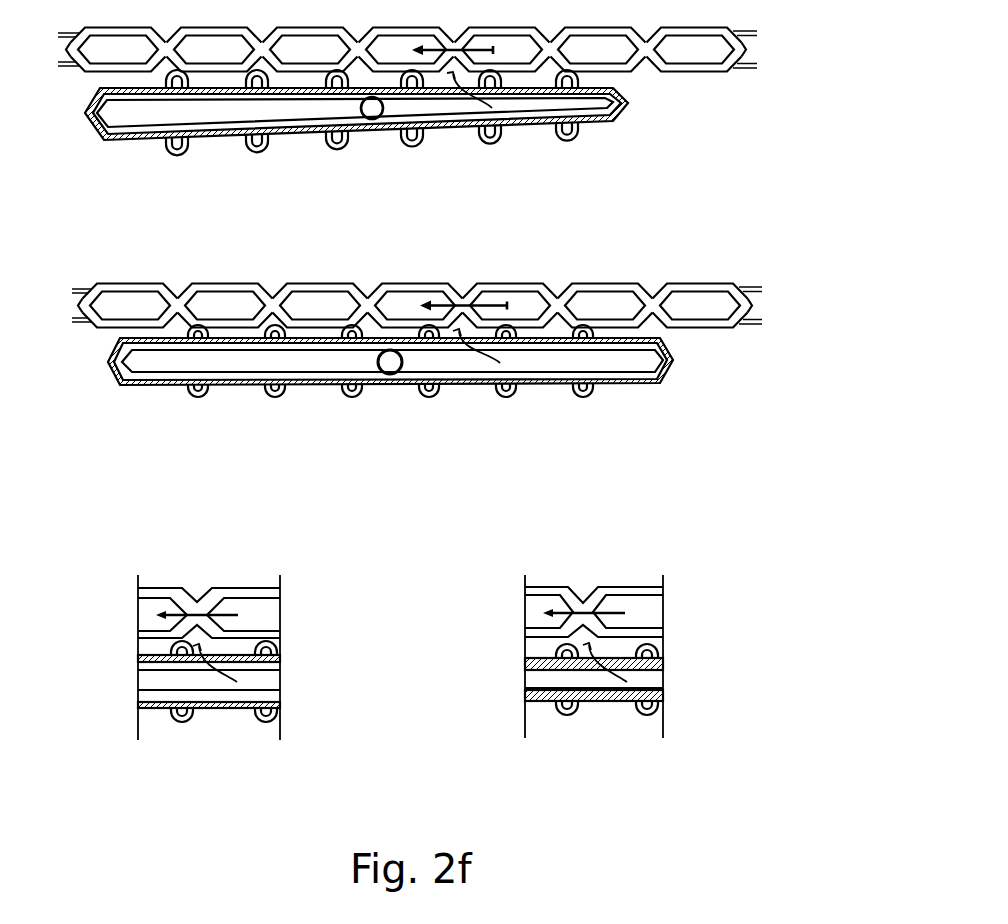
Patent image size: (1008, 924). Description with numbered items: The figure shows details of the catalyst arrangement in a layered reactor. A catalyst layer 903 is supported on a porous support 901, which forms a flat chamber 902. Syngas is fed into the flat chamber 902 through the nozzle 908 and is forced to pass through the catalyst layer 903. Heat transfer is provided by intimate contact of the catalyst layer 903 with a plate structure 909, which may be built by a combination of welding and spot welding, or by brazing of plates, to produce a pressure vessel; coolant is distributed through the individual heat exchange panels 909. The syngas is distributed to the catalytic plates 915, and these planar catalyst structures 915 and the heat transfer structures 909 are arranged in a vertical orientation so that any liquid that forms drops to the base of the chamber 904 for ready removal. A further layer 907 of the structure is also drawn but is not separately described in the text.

The porous support 901 is at (278, 657).
The flat chamber 902 is at (276, 684).
The catalyst layer 903 is at (278, 641).
The chamber 904 is at (272, 635).
The upper layer of cell structure 907 is at (258, 630).
The nozzle 908 is at (404, 367).
The plate structure 909 is at (697, 282).
The catalytic plates 915 is at (668, 364).